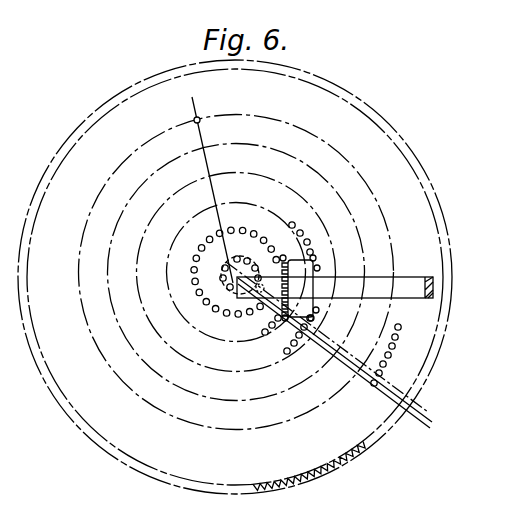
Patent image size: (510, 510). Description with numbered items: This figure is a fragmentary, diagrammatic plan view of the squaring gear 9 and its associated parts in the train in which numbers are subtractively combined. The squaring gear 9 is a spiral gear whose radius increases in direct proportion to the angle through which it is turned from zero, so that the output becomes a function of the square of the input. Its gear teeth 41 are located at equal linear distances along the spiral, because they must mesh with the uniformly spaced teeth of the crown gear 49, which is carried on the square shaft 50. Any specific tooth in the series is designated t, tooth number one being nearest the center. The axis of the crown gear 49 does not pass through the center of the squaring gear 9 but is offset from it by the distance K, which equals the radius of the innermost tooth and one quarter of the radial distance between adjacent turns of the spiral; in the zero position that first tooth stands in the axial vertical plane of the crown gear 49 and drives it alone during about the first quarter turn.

The squaring gear 9 is at (113, 471).
The gear teeth 41 is at (192, 277).
The crown gear 49 is at (305, 262).
The square shaft 50 is at (412, 279).
The specific tooth number in the series t is at (200, 117).
The offset of first tooth and crown gear axis K is at (409, 435).